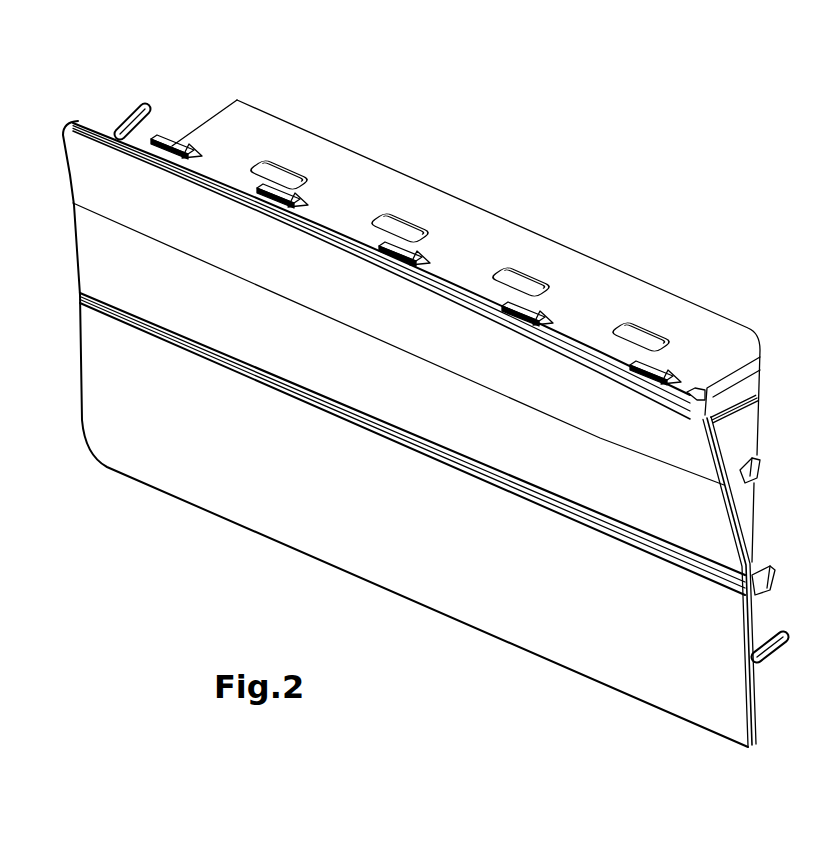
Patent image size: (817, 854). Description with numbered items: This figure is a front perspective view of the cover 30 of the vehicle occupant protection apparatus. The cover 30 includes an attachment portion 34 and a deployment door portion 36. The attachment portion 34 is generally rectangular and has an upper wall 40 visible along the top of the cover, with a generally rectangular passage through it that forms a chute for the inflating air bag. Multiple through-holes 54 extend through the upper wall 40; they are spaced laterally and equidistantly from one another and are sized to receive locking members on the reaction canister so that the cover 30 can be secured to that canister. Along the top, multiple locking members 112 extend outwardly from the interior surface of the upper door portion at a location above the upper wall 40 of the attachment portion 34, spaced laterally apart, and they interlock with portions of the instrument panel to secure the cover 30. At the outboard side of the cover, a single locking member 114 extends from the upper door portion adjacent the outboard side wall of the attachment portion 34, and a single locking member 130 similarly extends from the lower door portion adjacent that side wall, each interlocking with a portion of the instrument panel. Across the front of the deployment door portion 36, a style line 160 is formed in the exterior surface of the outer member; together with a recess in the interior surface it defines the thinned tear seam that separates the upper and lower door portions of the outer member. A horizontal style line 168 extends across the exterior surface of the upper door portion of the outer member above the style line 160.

The cover 30 is at (105, 512).
The attachment portion 34 is at (620, 262).
The deployment door portion 36 is at (452, 573).
The upper wall 40 is at (468, 226).
The through-holes 54 is at (401, 225).
The locking members 112 is at (185, 143).
The locking member 114 is at (757, 467).
The locking member 130 is at (773, 575).
The style line 160 is at (298, 387).
The style line 168 is at (130, 223).